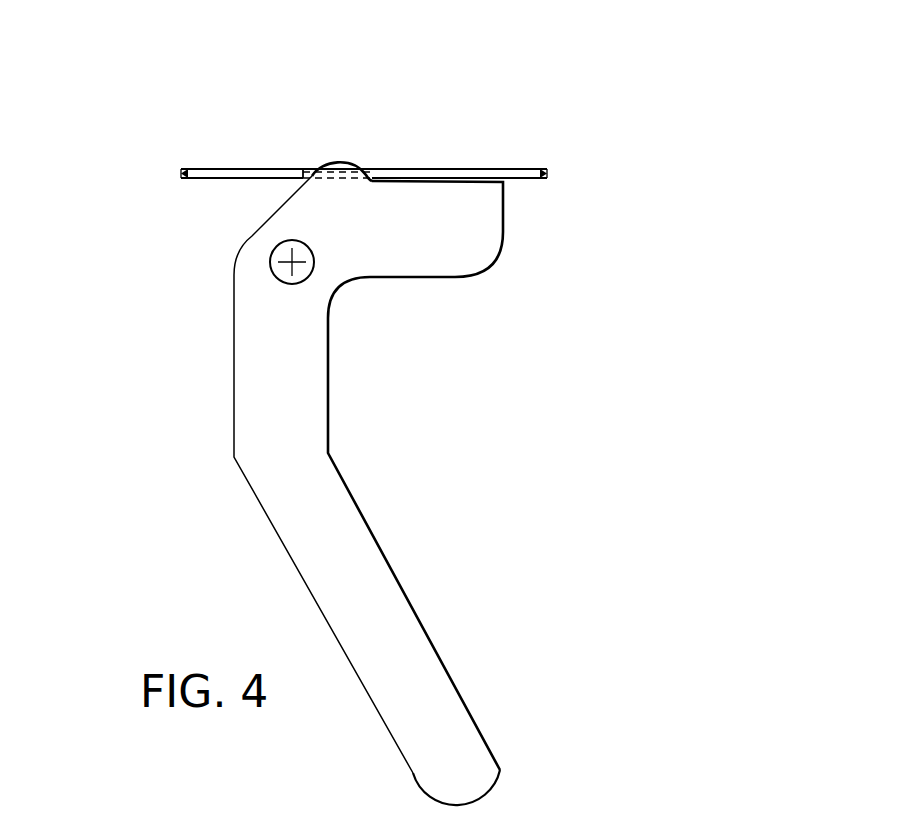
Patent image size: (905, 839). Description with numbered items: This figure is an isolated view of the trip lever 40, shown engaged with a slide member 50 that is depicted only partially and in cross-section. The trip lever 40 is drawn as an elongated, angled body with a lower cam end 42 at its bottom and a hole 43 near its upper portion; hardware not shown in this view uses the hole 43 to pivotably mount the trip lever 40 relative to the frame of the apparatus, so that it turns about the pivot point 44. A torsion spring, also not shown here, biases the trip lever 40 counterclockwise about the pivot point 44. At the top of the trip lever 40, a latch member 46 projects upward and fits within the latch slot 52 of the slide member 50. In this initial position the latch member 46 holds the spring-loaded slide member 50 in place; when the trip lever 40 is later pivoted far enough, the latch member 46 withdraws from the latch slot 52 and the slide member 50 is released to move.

The trip lever 40 is at (422, 512).
The lower cam end 42 is at (450, 757).
The hole 43 is at (276, 279).
The pivot point 44 is at (293, 264).
The latch member 46 is at (337, 161).
The slide member 50 is at (512, 168).
The latch slot 52 is at (367, 168).